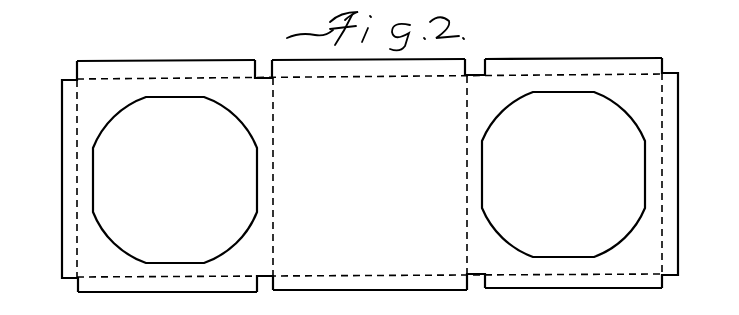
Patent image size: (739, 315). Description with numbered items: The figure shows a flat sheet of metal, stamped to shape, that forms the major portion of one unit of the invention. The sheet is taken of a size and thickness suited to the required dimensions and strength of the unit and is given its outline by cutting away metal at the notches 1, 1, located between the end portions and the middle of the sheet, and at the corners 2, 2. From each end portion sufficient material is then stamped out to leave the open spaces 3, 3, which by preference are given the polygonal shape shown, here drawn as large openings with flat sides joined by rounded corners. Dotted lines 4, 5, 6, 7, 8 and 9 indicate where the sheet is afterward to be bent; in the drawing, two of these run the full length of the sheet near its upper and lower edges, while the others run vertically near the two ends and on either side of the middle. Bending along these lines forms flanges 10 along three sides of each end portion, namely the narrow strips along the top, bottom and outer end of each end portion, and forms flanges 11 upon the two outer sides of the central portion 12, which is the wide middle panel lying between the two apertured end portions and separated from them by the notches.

The cut-out portions 1 is at (263, 76).
The corner cut-outs 2 is at (74, 79).
The open spaces 3 is at (369, 177).
The dotted bending line 4 is at (467, 186).
The dotted bending line 5 is at (275, 188).
The dotted bending line 6 is at (678, 167).
The dotted bending line 7 is at (77, 190).
The dotted bending line 8 is at (373, 290).
The dotted bending line 9 is at (216, 78).
The end portion flanges 10 is at (168, 62).
The central portion flanges 11 is at (428, 62).
The central portion 12 is at (369, 225).